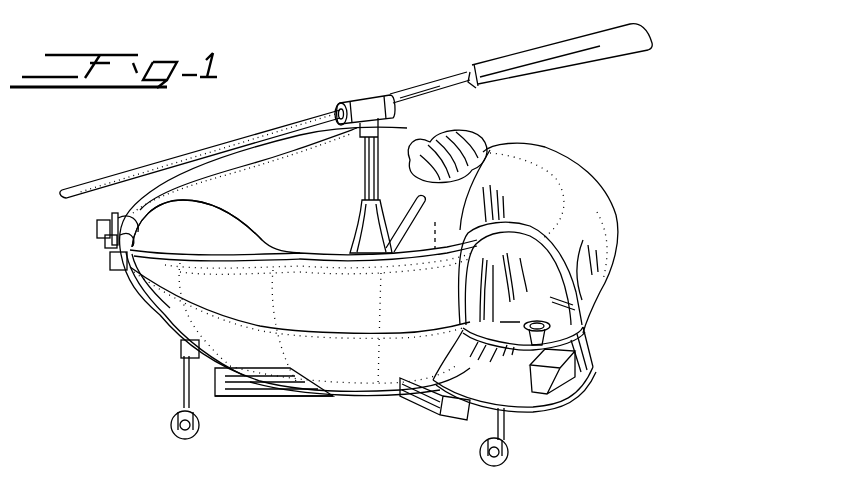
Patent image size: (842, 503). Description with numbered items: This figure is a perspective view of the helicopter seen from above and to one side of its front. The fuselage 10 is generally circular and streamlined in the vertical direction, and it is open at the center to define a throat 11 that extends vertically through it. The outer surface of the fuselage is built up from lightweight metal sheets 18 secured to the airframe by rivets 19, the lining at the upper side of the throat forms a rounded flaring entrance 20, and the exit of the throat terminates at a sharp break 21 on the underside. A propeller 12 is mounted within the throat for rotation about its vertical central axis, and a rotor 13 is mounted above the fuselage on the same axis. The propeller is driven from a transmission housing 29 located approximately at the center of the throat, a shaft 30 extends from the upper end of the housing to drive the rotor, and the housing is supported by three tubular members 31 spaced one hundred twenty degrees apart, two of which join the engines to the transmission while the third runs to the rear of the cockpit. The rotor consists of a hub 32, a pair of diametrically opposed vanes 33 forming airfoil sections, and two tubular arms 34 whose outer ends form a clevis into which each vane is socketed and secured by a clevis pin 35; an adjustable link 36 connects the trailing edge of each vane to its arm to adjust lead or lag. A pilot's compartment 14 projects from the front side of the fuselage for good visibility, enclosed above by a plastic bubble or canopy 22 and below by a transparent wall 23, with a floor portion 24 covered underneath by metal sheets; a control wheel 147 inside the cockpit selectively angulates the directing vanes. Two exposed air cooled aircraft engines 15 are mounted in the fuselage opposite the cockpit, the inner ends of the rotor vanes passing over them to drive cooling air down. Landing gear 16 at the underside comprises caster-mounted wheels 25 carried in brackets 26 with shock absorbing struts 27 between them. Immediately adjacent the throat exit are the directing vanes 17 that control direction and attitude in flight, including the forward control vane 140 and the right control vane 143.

The fuselage 10 is at (600, 223).
The throat 11 is at (461, 208).
The propeller 12 is at (350, 250).
The rotor 13 is at (424, 86).
The pilot's compartment 14 is at (590, 338).
The air cooled aircraft engine 15 is at (482, 138).
The landing gear 16 is at (183, 379).
The directing vanes 17 is at (286, 396).
The lightweight metal sheets 18 is at (560, 165).
The rivets 19 is at (585, 242).
The rounded flaring entrance 20 is at (522, 178).
The sharp break 21 is at (350, 397).
The plastic bubble or canopy 22 is at (522, 248).
The transparent wall 23 is at (590, 356).
The floor portion 24 is at (580, 402).
The caster-mounted wheels 25 is at (508, 454).
The brackets 26 is at (181, 352).
The shock absorbing struts 27 is at (506, 420).
The transmission housing 29 is at (358, 217).
The shaft 30 is at (365, 158).
The tubular member 31 is at (415, 210).
The hub 32 is at (361, 100).
The vane 33 is at (168, 162).
The tubular arm 34 is at (296, 134).
The clevis pin 35 is at (492, 70).
The adjustable link 36 is at (478, 92).
The control vane 140 is at (438, 405).
The right control vane 143 is at (246, 390).
The control wheel 147 is at (556, 326).